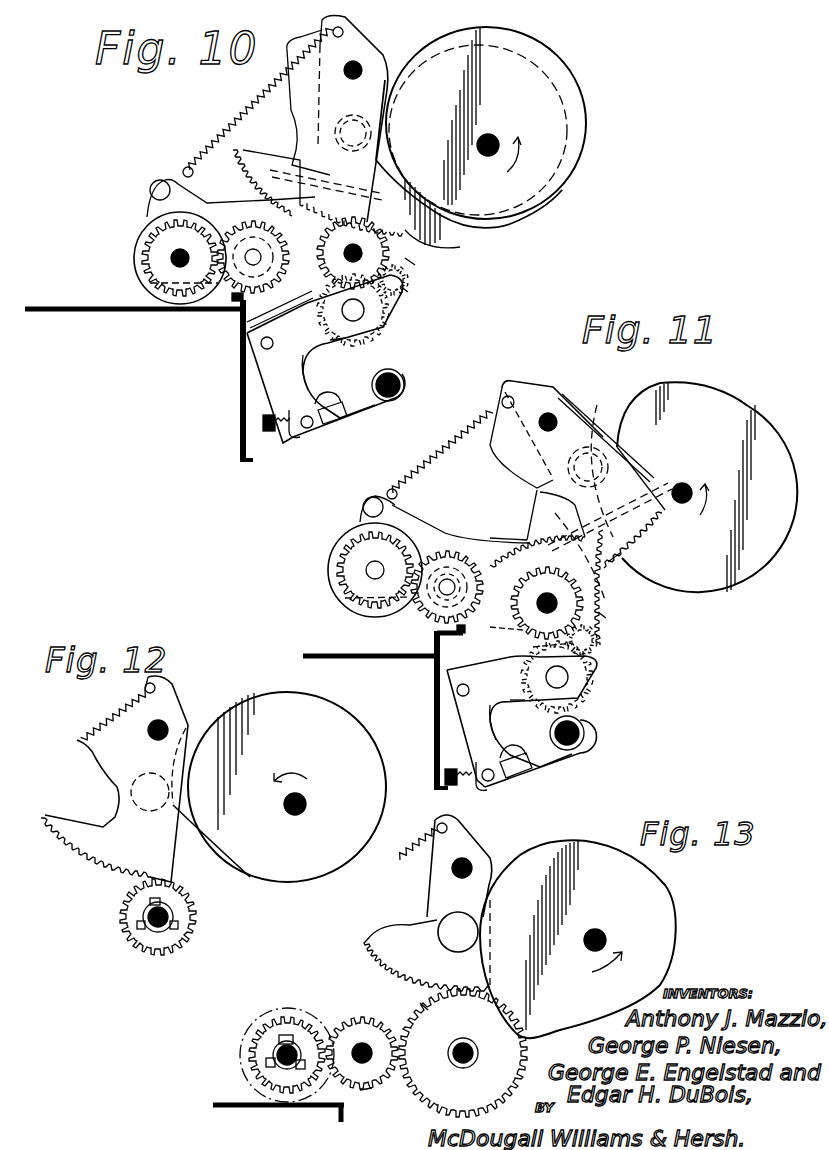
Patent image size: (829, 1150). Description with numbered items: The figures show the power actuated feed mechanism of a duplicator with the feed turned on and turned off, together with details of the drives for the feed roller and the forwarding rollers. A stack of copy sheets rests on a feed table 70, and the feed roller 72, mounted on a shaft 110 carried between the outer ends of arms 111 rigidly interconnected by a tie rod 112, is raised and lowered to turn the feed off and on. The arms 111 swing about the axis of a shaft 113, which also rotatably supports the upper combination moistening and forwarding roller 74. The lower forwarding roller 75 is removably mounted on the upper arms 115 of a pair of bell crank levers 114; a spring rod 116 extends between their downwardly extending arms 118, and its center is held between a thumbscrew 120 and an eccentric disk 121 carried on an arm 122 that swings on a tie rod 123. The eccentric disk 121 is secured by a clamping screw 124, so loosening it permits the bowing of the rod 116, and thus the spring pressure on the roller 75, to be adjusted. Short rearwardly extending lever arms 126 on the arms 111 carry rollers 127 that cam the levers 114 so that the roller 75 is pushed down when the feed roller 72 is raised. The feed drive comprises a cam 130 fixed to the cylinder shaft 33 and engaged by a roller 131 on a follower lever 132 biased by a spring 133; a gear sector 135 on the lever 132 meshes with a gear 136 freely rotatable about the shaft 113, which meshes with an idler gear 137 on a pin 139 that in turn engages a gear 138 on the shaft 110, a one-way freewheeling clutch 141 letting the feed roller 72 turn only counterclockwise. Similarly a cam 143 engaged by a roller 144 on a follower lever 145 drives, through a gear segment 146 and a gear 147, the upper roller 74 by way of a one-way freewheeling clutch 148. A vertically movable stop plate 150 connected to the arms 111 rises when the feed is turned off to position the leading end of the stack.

In FIG. 10, the cylinder shaft 33 is at (493, 137).
In FIG. 11, the cylinder shaft 33 is at (688, 484).
In FIG. 12, the cylinder shaft 33 is at (284, 806).
In FIG. 13, the cylinder shaft 33 is at (600, 929).
In FIG. 10, the feed table 70 is at (50, 307).
In FIG. 11, the feed table 70 is at (320, 657).
In FIG. 13, the feed table 70 is at (278, 1112).
In FIG. 10, the feed roller 72 is at (135, 243).
In FIG. 11, the feed roller 72 is at (330, 568).
In FIG. 13, the feed roller 72 is at (255, 1020).
In FIG. 10, the upper combination moistening and forwarding roller 74 is at (404, 278).
In FIG. 11, the upper combination moistening and forwarding roller 74 is at (580, 609).
In FIG. 10, the lower forwarding roller 75 is at (392, 318).
In FIG. 11, the lower forwarding roller 75 is at (587, 677).
In FIG. 10, the shaft 110 is at (172, 260).
In FIG. 11, the shaft 110 is at (367, 573).
In FIG. 13, the shaft 110 is at (278, 1050).
In FIG. 10, the arms 111 is at (218, 205).
In FIG. 11, the arms 111 is at (465, 541).
In FIG. 10, the tie rod 112 is at (160, 180).
In FIG. 11, the tie rod 112 is at (362, 505).
In FIG. 10, the shaft 113 is at (346, 250).
In FIG. 11, the shaft 113 is at (549, 612).
In FIG. 13, the shaft 113 is at (466, 1037).
In FIG. 10, the bell crank levers 114 is at (308, 374).
In FIG. 11, the bell crank levers 114 is at (440, 726).
In FIG. 10, the upper arms 115 is at (326, 345).
In FIG. 11, the upper arms 115 is at (518, 700).
In FIG. 10, the spring rod 116 is at (308, 429).
In FIG. 11, the spring rod 116 is at (491, 782).
In FIG. 10, the downwardly extending arms 118 is at (277, 388).
In FIG. 11, the downwardly extending arms 118 is at (467, 743).
In FIG. 10, the thumbscrew 120 is at (268, 432).
In FIG. 11, the thumbscrew 120 is at (455, 787).
In FIG. 10, the eccentric disk 121 is at (331, 418).
In FIG. 11, the eccentric disk 121 is at (521, 770).
In FIG. 10, the arm 122 is at (361, 412).
In FIG. 11, the arm 122 is at (560, 754).
In FIG. 10, the tie rod 123 is at (399, 377).
In FIG. 11, the tie rod 123 is at (584, 733).
In FIG. 10, the clamping screw 124 is at (326, 402).
In FIG. 11, the clamping screw 124 is at (511, 752).
In FIG. 10, the lever arms 126 is at (414, 262).
In FIG. 11, the lever arms 126 is at (605, 616).
In FIG. 10, the rollers 127 is at (408, 290).
In FIG. 11, the rollers 127 is at (600, 646).
In FIG. 10, the cam 130 is at (470, 228).
In FIG. 11, the cam 130 is at (672, 384).
In FIG. 13, the cam 130 is at (662, 905).
In FIG. 10, the roller 131 is at (325, 172).
In FIG. 11, the roller 131 is at (598, 432).
In FIG. 13, the roller 131 is at (440, 918).
In FIG. 10, the follower lever 132 is at (294, 127).
In FIG. 13, the follower lever 132 is at (473, 844).
In FIG. 10, the spring 133 is at (328, 38).
In FIG. 11, the spring 133 is at (482, 428).
In FIG. 12, the spring 133 is at (115, 716).
In FIG. 13, the spring 133 is at (403, 850).
In FIG. 10, the gear sector 135 is at (262, 156).
In FIG. 11, the gear sector 135 is at (530, 527).
In FIG. 13, the gear sector 135 is at (392, 969).
In FIG. 10, the gear 136 is at (417, 248).
In FIG. 11, the gear 136 is at (608, 598).
In FIG. 13, the gear 136 is at (422, 1003).
In FIG. 10, the idler gear 137 is at (229, 307).
In FIG. 11, the idler gear 137 is at (432, 631).
In FIG. 13, the idler gear 137 is at (367, 1096).
In FIG. 10, the gear 138 is at (150, 285).
In FIG. 11, the gear 138 is at (375, 614).
In FIG. 13, the gear 138 is at (250, 1058).
In FIG. 10, the shaft or pin 139 is at (252, 248).
In FIG. 11, the shaft or pin 139 is at (435, 593).
In FIG. 13, the shaft or pin 139 is at (361, 1042).
In FIG. 13, the one-way freewheeling clutch 141 is at (290, 1035).
In FIG. 10, the cam 143 is at (584, 142).
In FIG. 11, the cam 143 is at (753, 403).
In FIG. 12, the cam 143 is at (250, 857).
In FIG. 10, the roller 144 is at (383, 140).
In FIG. 11, the roller 144 is at (565, 480).
In FIG. 12, the roller 144 is at (131, 793).
In FIG. 10, the follower lever 145 is at (362, 50).
In FIG. 11, the follower lever 145 is at (562, 400).
In FIG. 12, the follower lever 145 is at (105, 758).
In FIG. 10, the gear segment 146 is at (240, 176).
In FIG. 11, the gear segment 146 is at (606, 570).
In FIG. 12, the gear segment 146 is at (95, 870).
In FIG. 12, the gear 147 is at (193, 916).
In FIG. 12, the one-way freewheeling clutch 148 is at (136, 928).
In FIG. 10, the stop plate 150 is at (240, 421).
In FIG. 11, the stop plate 150 is at (434, 697).